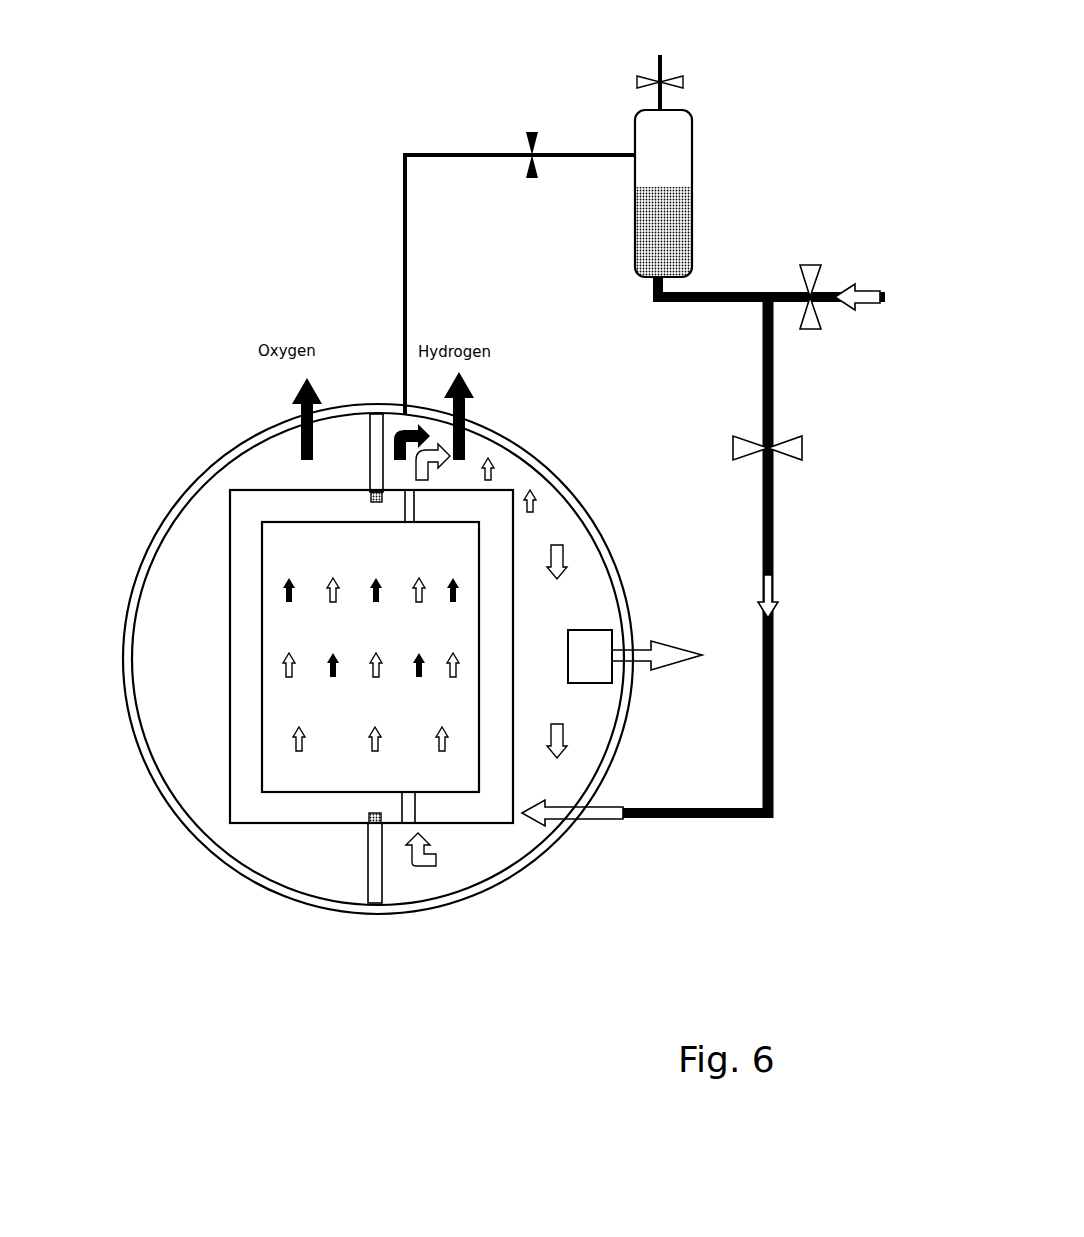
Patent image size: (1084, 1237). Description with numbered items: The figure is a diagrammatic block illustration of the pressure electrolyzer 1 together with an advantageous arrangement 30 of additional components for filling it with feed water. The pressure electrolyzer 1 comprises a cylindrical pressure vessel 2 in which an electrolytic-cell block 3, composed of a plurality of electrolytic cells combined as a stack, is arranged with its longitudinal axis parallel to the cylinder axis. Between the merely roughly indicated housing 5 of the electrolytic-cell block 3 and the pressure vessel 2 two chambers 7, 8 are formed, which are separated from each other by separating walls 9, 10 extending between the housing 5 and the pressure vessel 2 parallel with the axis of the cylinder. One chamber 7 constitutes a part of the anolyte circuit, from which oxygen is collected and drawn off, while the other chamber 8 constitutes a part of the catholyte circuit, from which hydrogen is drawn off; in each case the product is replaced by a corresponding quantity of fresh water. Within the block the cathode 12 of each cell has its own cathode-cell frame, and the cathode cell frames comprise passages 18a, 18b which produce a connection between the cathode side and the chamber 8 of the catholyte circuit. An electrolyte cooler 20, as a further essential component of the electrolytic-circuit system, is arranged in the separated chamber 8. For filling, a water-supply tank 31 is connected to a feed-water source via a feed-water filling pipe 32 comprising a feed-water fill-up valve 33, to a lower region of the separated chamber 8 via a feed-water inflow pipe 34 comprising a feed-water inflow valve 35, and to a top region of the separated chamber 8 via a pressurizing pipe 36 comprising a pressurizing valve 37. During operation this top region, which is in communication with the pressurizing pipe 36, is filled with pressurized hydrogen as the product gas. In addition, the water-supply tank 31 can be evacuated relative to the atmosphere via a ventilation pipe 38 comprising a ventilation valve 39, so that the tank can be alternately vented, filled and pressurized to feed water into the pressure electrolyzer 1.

The pressure electrolyzer 1 is at (140, 886).
The pressure vessel 2 is at (562, 472).
The electrolytic-cell block 3 is at (222, 551).
The housing 5 is at (250, 516).
The chamber 7 is at (200, 718).
The chamber 8 is at (555, 711).
The separating wall 9 is at (378, 432).
The separating wall 10 is at (376, 870).
The cathode 12 is at (352, 722).
The passage 18a is at (406, 512).
The passage 18b is at (407, 810).
The electrolyte cooler 20 is at (602, 674).
The arrangement for filling the pressure electrolyzer with feed water 30 is at (560, 252).
The water-supply tank 31 is at (672, 160).
The feed-water filling pipe 32 is at (790, 292).
The feed-water fill-up valve 33 is at (813, 265).
The feed-water inflow pipe 34 is at (775, 483).
The feed-water inflow valve 35 is at (770, 448).
The pressurizing pipe 36 is at (452, 155).
The pressurizing valve 37 is at (532, 130).
The ventilation pipe 38 is at (665, 98).
The ventilation valve 39 is at (680, 78).